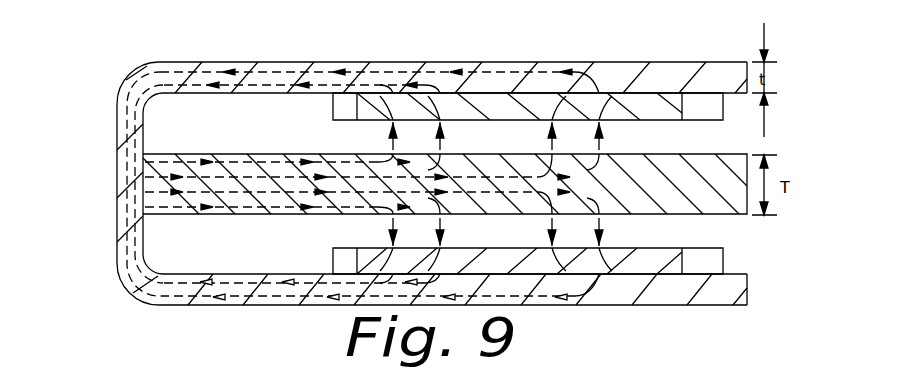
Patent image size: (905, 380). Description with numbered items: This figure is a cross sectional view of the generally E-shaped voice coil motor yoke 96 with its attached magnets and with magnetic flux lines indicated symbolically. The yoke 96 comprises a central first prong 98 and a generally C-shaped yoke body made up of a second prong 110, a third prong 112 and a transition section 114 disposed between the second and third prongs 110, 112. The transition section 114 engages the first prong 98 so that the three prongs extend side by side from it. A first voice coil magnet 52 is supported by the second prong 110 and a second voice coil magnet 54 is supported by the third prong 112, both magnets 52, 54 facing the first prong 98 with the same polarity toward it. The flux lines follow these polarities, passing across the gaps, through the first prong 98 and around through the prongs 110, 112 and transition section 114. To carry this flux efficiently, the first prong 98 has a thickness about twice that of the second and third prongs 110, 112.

The voice coil motor yoke 96 is at (316, 43).
The third prong 112 is at (627, 76).
The second voice coil magnet 54 is at (660, 102).
The first prong 98 is at (723, 212).
The first voice coil magnet 52 is at (623, 262).
The second prong 110 is at (668, 292).
The transition section 114 is at (117, 183).